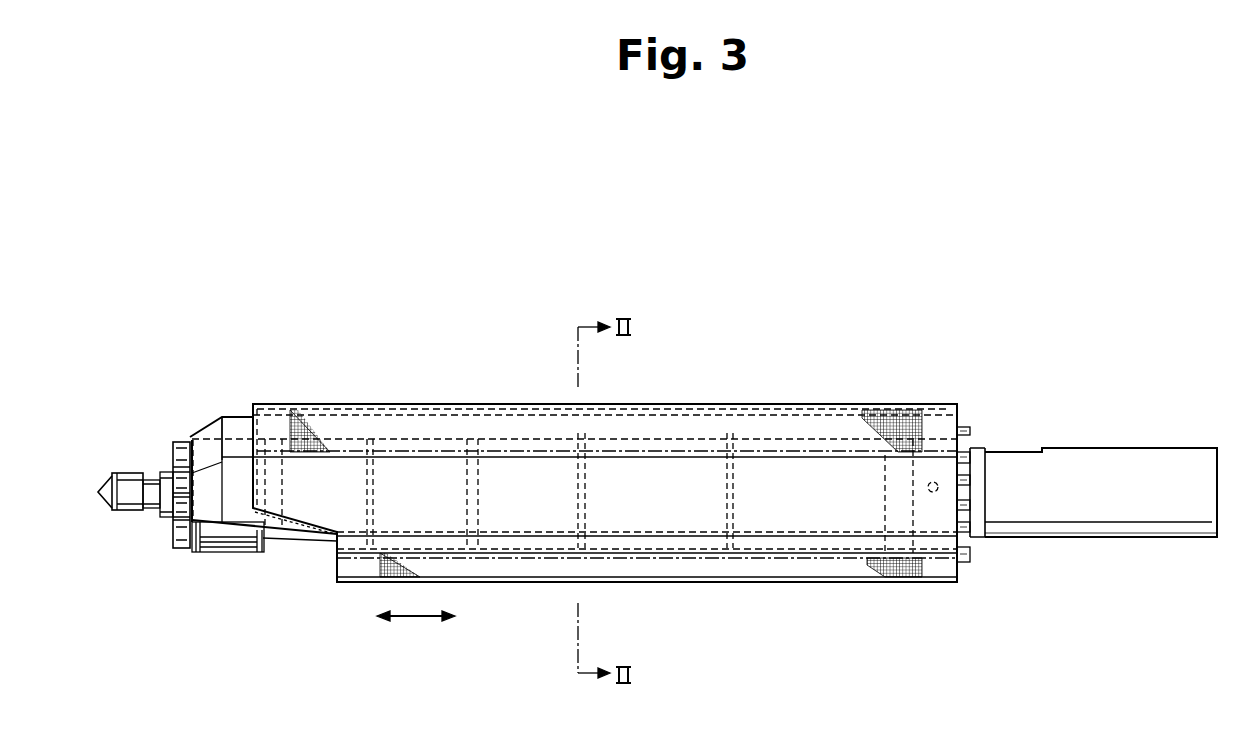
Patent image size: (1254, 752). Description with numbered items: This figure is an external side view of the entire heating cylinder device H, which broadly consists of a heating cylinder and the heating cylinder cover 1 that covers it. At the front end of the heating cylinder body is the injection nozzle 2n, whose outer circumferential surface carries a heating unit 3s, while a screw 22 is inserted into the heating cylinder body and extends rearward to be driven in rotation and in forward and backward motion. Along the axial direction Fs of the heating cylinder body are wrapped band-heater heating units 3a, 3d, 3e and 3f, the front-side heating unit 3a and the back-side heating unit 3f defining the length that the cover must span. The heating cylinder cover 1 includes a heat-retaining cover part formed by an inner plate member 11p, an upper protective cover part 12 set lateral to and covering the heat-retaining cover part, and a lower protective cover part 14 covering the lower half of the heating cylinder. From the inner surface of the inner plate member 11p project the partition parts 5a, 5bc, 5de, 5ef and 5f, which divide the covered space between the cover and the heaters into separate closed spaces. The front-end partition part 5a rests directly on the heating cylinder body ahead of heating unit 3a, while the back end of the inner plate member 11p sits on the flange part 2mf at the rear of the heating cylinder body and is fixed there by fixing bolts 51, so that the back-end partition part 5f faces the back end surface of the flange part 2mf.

The heating cylinder cover 1 is at (684, 402).
The heating cylinder device H is at (756, 352).
The injection nozzle 2n is at (100, 491).
The heating unit 3s is at (128, 512).
The heating unit 3a is at (228, 553).
The front-end partition part 5a is at (188, 436).
The inner plate member 11p is at (235, 416).
The partition part 5bc is at (348, 438).
The upper protective cover part 12 is at (389, 403).
The partition part 5de is at (582, 440).
The partition part 5ef is at (729, 436).
The back-end partition part 5f is at (965, 407).
The screw 22 is at (1068, 447).
The lower protective cover part 14 is at (358, 584).
The axial direction Fs is at (415, 622).
The heating unit 3d is at (512, 566).
The heating unit 3e is at (693, 554).
The heating unit 3f is at (792, 551).
The flange part 2mf is at (913, 500).
The fixing bolt 51 is at (935, 495).